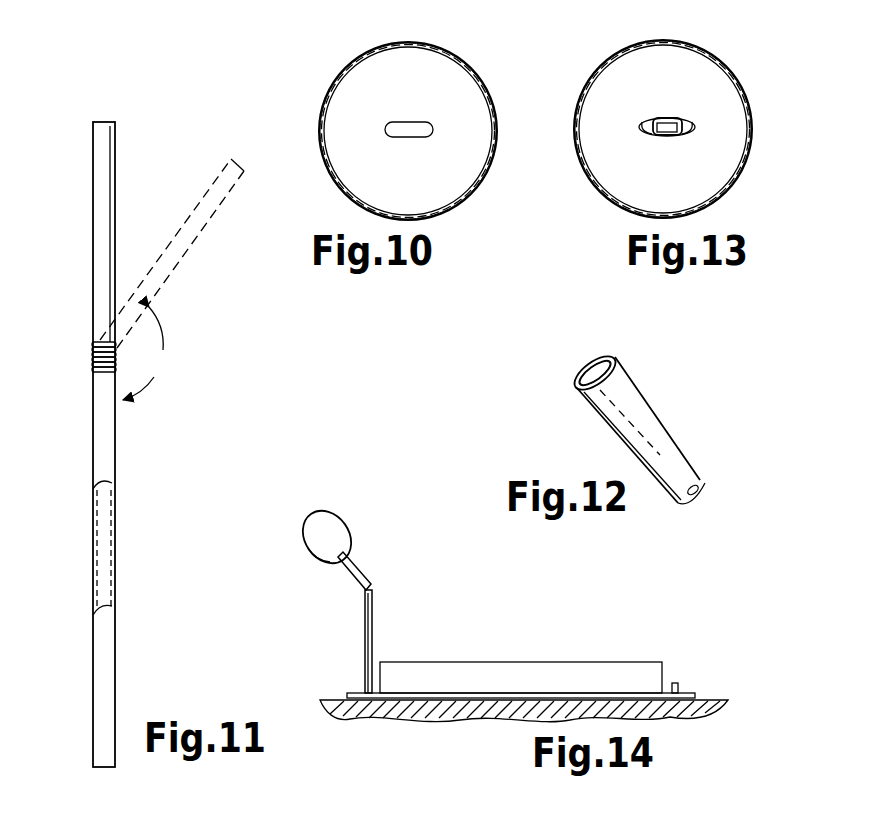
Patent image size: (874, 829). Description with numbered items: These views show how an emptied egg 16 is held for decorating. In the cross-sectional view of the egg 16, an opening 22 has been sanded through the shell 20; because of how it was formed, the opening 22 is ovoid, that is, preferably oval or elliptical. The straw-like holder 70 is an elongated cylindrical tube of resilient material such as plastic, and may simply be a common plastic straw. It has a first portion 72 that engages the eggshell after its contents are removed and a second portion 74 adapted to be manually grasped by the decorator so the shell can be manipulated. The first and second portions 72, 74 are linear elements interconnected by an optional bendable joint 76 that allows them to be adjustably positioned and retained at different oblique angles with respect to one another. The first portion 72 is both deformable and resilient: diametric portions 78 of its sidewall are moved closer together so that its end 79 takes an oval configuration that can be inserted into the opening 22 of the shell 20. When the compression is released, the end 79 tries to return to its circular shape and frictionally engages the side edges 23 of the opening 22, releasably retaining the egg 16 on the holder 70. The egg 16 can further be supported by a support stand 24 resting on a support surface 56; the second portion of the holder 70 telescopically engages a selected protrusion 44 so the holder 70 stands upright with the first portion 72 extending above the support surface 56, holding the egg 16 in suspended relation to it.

In FIG. 10, the egg 16 is at (316, 84).
In FIG. 13, the egg 16 is at (724, 41).
In FIG. 10, the shell 20 is at (478, 70).
In FIG. 13, the shell 20 is at (735, 72).
In FIG. 14, the shell 20 is at (335, 531).
In FIG. 10, the opening 22 is at (413, 140).
In FIG. 13, the opening 22 is at (695, 124).
In FIG. 13, the side edges 23 is at (641, 122).
In FIG. 14, the support stand 24 is at (587, 643).
In FIG. 14, the protrusion 44 is at (678, 684).
In FIG. 14, the support surface 56 is at (700, 700).
In FIG. 11, the holder 70 is at (160, 412).
In FIG. 12, the holder 70 is at (682, 412).
In FIG. 14, the holder 70 is at (373, 607).
In FIG. 13, the first portion 72 is at (673, 137).
In FIG. 11, the first portion 72 is at (100, 215).
In FIG. 12, the first portion 72 is at (652, 380).
In FIG. 14, the first portion 72 is at (358, 568).
In FIG. 11, the second portion 74 is at (110, 626).
In FIG. 14, the second portion 74 is at (373, 638).
In FIG. 11, the bendable joint 76 is at (92, 351).
In FIG. 12, the diametric portions 78 is at (600, 362).
In FIG. 12, the end 79 is at (575, 385).